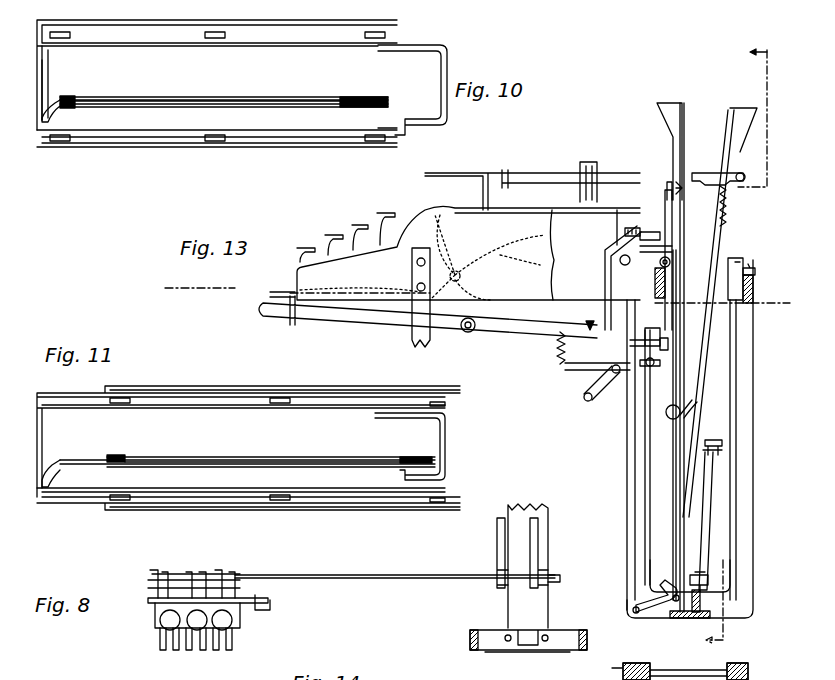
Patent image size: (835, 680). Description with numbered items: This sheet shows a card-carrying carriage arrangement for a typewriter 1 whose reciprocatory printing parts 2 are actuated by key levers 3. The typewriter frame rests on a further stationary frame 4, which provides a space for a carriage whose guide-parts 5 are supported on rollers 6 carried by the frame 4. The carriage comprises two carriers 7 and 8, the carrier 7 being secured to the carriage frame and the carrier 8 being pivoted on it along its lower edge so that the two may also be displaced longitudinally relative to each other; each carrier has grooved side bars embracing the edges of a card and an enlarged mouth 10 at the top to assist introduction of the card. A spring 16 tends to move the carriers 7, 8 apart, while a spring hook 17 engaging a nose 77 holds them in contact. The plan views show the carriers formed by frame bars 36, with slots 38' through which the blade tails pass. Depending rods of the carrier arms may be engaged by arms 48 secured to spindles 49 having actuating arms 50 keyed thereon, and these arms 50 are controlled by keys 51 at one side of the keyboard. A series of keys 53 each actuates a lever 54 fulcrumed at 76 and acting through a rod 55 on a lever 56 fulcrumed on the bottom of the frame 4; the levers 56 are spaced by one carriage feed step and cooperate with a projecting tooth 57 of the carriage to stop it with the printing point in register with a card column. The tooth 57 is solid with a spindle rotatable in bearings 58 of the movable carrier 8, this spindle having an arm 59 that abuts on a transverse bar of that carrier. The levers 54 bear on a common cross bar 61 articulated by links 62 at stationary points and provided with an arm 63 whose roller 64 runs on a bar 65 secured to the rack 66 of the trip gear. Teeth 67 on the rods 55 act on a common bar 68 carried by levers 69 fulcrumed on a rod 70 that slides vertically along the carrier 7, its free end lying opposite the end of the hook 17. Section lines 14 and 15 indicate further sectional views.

In FIG. 13, the typewriter 1 is at (432, 215).
In FIG. 13, the reciprocatory printing parts 2 is at (537, 175).
In FIG. 13, the key levers 3 is at (333, 235).
In FIG. 10, the stationary frame 4 is at (103, 25).
In FIG. 11, the stationary frame 4 is at (200, 507).
In FIG. 13, the stationary frame 4 is at (742, 542).
In FIG. 8, the stationary frame 4 is at (468, 637).
In FIG. 10, the guide-parts 5 is at (292, 37).
In FIG. 11, the guide-parts 5 is at (40, 441).
In FIG. 13, the guide-parts 5 is at (735, 262).
In FIG. 10, the rollers 6 is at (215, 38).
In FIG. 11, the rollers 6 is at (442, 500).
In FIG. 13, the rollers 6 is at (754, 290).
In FIG. 10, the carrier 7 is at (153, 103).
In FIG. 11, the carrier 7 is at (97, 465).
In FIG. 13, the carrier 7 is at (681, 245).
In FIG. 10, the carrier 8 is at (156, 98).
In FIG. 11, the carrier 8 is at (168, 458).
In FIG. 13, the carrier 8 is at (722, 238).
In FIG. 13, the enlarged mouth 10 is at (670, 113).
In FIG. 13, the section line 14 is at (459, 307).
In FIG. 13, the section line 15 is at (749, 346).
In FIG. 13, the spring 16 is at (704, 380).
In FIG. 13, the spring hook 17 is at (715, 172).
In FIG. 10, the frame bars 36 is at (276, 97).
In FIG. 11, the frame bars 36 is at (303, 457).
In FIG. 10, the slots 38' is at (364, 92).
In FIG. 11, the slots 38' is at (413, 449).
In FIG. 8, the arms 48 is at (537, 551).
In FIG. 8, the spindles 49 is at (372, 581).
In FIG. 8, the actuating arms 50 is at (192, 648).
In FIG. 8, the keys 51 is at (222, 622).
In FIG. 13, the keys 53 is at (276, 303).
In FIG. 13, the lever 54 is at (352, 318).
In FIG. 13, the rod 55 is at (640, 490).
In FIG. 13, the lever 56 is at (672, 582).
In FIG. 13, the projecting tooth 57 is at (710, 578).
In FIG. 13, the push rod 58 is at (712, 503).
In FIG. 13, the arm 59 is at (724, 450).
In FIG. 13, the common cross bar 61 is at (588, 324).
In FIG. 13, the links 62 is at (606, 386).
In FIG. 13, the arm 63 is at (608, 250).
In FIG. 13, the roller 64 is at (624, 232).
In FIG. 13, the bar 65 is at (645, 210).
In FIG. 13, the rack 66 is at (671, 258).
In FIG. 13, the teeth 67 is at (650, 367).
In FIG. 13, the common bar 68 is at (642, 328).
In FIG. 13, the levers 69 is at (662, 338).
In FIG. 13, the rod 70 is at (668, 187).
In FIG. 13, the fulcrum 76 is at (472, 332).
In FIG. 13, the nose 77 is at (683, 185).